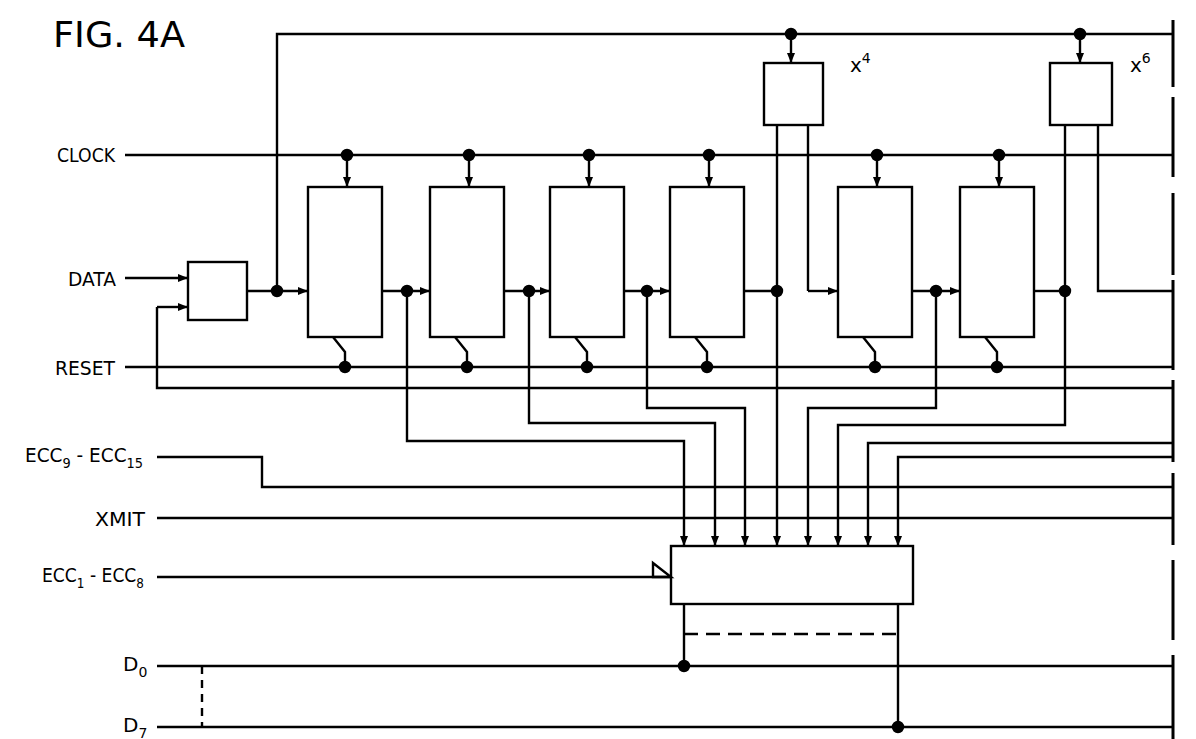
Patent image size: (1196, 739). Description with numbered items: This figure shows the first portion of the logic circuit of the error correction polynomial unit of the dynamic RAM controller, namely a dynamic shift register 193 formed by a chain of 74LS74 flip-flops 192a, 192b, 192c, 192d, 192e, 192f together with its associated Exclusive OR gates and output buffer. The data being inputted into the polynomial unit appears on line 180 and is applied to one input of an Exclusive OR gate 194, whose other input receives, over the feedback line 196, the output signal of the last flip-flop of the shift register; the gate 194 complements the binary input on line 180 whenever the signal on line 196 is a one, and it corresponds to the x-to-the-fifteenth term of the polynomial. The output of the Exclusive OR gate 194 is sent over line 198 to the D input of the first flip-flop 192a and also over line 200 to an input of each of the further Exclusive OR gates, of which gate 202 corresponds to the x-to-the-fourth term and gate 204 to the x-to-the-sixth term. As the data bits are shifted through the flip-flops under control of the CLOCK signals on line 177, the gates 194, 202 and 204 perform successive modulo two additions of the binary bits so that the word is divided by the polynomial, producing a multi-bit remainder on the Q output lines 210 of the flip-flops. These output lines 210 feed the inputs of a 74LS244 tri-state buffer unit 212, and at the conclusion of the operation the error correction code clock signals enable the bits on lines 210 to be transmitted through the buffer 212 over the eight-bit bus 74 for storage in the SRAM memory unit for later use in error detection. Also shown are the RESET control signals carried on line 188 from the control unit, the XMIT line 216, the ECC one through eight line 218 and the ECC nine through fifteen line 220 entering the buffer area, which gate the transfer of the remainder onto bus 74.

The dynamic shift register 193 is at (264, 122).
The clock line 177 is at (222, 154).
The data input line 180 is at (144, 278).
The Exclusive OR gate 194 is at (217, 261).
The output line of Exclusive OR gate 198 is at (260, 295).
The line to Exclusive OR gates 200 is at (453, 35).
The control signal line 188 is at (232, 368).
The feedback line 196 is at (286, 389).
The flip-flop 192a is at (316, 186).
The flip-flop 192b is at (438, 186).
The flip-flop 192c is at (558, 186).
The flip-flop 192d is at (678, 186).
The flip-flop 192e is at (846, 186).
The flip-flop 192f is at (968, 186).
The Exclusive OR gate 202 is at (764, 79).
The Exclusive OR gate 204 is at (1050, 79).
The Q output lines 210 is at (406, 424).
The ECC9-ECC15 line 220 is at (437, 486).
The XMIT line 216 is at (372, 519).
The ECC1-ECC8 line 218 is at (397, 569).
The tri-state buffer unit 212 is at (914, 581).
The 8-bit bus 74 is at (345, 665).